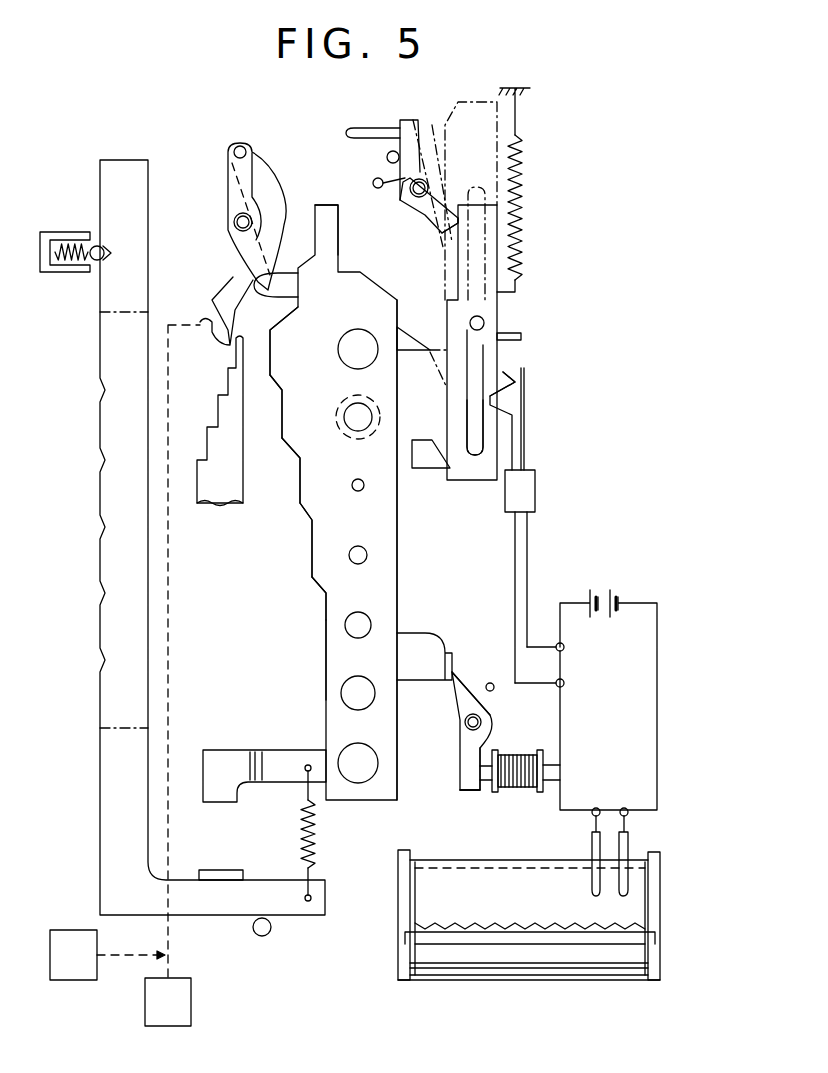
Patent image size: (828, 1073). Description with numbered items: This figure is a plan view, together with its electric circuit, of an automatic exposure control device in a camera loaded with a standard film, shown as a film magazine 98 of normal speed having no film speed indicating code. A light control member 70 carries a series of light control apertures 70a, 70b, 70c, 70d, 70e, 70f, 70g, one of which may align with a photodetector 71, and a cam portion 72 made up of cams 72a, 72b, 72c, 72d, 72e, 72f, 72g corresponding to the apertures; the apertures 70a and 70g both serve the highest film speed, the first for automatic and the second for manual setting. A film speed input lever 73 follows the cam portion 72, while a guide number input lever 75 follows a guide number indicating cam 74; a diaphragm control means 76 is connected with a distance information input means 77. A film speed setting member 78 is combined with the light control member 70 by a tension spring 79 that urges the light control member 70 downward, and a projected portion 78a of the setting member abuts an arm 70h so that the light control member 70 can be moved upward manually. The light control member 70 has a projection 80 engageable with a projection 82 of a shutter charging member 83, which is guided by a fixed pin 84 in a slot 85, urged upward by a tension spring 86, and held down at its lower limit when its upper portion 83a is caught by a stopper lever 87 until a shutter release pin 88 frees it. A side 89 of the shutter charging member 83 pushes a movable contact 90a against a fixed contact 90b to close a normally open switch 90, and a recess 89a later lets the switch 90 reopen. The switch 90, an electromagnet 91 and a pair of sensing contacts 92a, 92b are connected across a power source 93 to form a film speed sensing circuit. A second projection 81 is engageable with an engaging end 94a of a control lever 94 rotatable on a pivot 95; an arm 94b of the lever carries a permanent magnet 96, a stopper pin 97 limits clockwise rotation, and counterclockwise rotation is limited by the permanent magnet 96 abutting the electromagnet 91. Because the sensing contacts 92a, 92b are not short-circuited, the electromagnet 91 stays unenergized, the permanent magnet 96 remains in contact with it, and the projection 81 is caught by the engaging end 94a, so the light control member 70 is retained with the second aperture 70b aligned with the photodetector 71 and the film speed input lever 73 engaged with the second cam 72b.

The light control member 70 is at (340, 254).
The light control aperture 70a is at (358, 330).
The second light control aperture 70b is at (346, 403).
The light control aperture 70c is at (353, 481).
The light control aperture 70d is at (356, 546).
The light control aperture 70e is at (352, 614).
The light control aperture 70f is at (341, 690).
The light control aperture 70g is at (340, 758).
The arm 70h is at (270, 782).
The photodetector 71 is at (397, 462).
The cam portion 72 is at (303, 515).
The cam 72a is at (313, 220).
The second cam 72b is at (258, 280).
The cam 72c is at (270, 345).
The cam 72d is at (278, 418).
The cam 72e is at (298, 478).
The cam 72f is at (312, 556).
The cam 72g is at (325, 612).
The film speed input lever 73 is at (232, 198).
The guide number indicating cam 74 is at (214, 503).
The guide number input lever 75 is at (215, 295).
The diaphragm control means 76 is at (172, 675).
The distance information input means 77 is at (107, 955).
The film speed setting member 78 is at (100, 345).
The projected portion 78a is at (220, 870).
The tension spring 79 is at (314, 834).
The projection 80 is at (410, 330).
The projection 81 is at (418, 633).
The projection 82 is at (430, 440).
The shutter charging member 83 is at (497, 300).
The upper portion 83a is at (442, 235).
The pin 84 is at (484, 323).
The slot 85 is at (483, 357).
The tension spring 86 is at (524, 165).
The stopper lever 87 is at (440, 207).
The shutter release pin 88 is at (376, 128).
The side 89 is at (500, 452).
The recess 89a is at (478, 425).
The normally open switch 90 is at (536, 492).
The movable contact 90a is at (513, 385).
The fixed contact 90b is at (525, 416).
The electromagnet 91 is at (515, 752).
The sensing contact 92a is at (592, 860).
The sensing contact 92b is at (630, 860).
The power source 93 is at (598, 590).
The control lever 94 is at (460, 740).
The engaging end 94a is at (456, 680).
The arm 94b is at (462, 788).
The pivot 95 is at (480, 718).
The permanent magnet 96 is at (500, 795).
The stopper pin 97 is at (490, 683).
The film magazine 98 is at (480, 975).